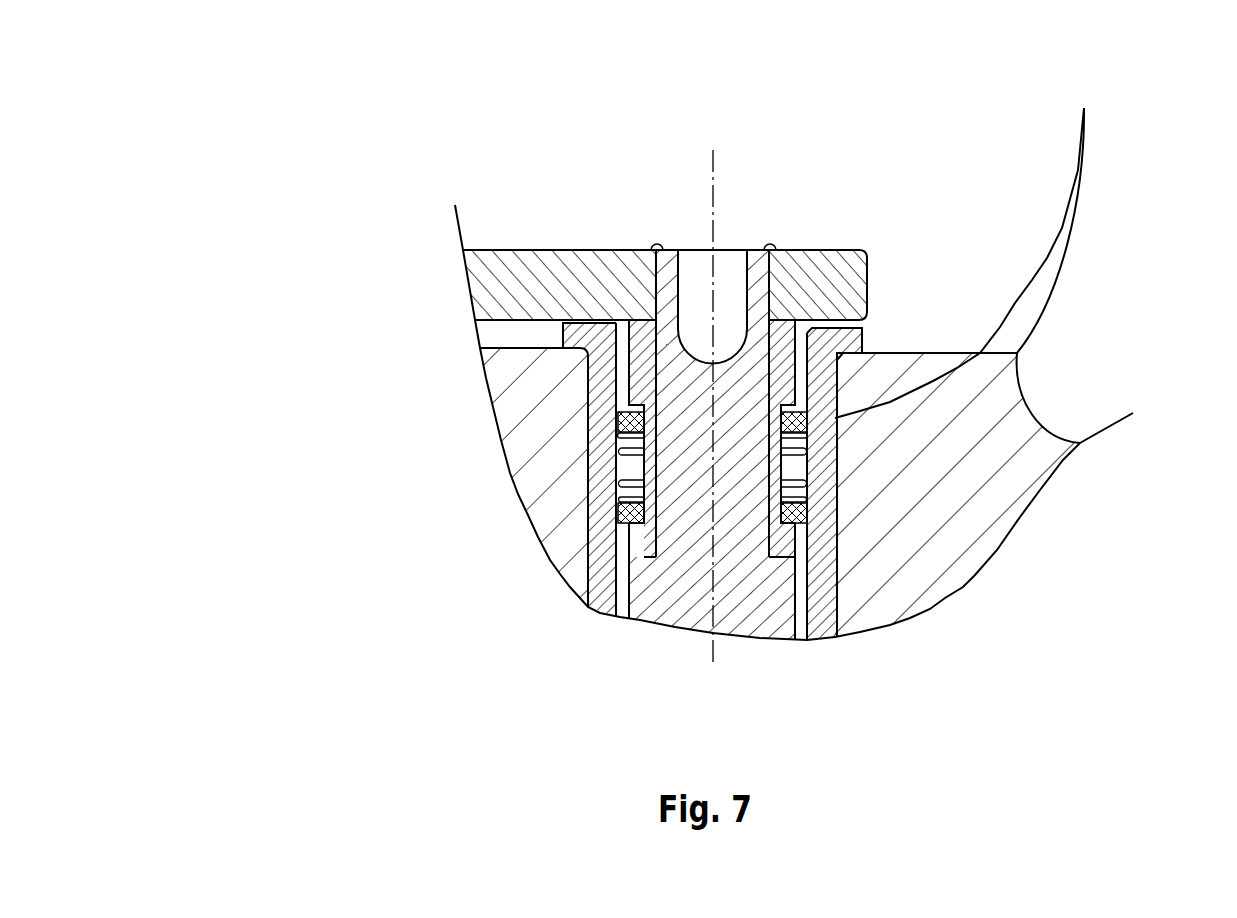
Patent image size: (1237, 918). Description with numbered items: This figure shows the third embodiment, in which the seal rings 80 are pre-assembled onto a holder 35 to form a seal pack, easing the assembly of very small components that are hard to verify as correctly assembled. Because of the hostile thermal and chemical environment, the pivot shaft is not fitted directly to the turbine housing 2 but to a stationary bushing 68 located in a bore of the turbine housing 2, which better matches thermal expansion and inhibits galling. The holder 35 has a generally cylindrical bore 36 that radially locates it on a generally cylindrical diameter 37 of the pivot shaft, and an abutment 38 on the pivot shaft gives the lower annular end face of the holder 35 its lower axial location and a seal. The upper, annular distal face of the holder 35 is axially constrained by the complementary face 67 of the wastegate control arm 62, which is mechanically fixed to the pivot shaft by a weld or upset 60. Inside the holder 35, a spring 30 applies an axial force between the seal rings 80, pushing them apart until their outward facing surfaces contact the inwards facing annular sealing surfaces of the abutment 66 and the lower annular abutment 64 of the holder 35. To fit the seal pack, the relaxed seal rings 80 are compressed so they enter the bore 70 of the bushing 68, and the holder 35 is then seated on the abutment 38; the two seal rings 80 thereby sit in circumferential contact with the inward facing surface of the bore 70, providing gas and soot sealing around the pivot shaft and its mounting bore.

The turbine housing 2 is at (545, 462).
The spring 30 is at (641, 456).
The holder 35 is at (779, 542).
The cylindrical bore 36 is at (633, 489).
The cylindrical diameter 37 is at (647, 479).
The abutment 38 is at (645, 560).
The weld or upset 60 is at (768, 246).
The wastegate control arm 62 is at (812, 277).
The annular abutment 64 is at (640, 318).
The abutment 66 is at (638, 537).
The complementary face 67 is at (640, 398).
The bushing 68 is at (818, 355).
The bore 70 is at (803, 377).
The seal rings 80 is at (972, 349).